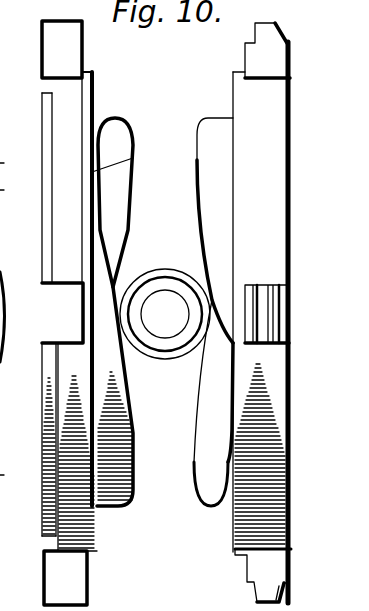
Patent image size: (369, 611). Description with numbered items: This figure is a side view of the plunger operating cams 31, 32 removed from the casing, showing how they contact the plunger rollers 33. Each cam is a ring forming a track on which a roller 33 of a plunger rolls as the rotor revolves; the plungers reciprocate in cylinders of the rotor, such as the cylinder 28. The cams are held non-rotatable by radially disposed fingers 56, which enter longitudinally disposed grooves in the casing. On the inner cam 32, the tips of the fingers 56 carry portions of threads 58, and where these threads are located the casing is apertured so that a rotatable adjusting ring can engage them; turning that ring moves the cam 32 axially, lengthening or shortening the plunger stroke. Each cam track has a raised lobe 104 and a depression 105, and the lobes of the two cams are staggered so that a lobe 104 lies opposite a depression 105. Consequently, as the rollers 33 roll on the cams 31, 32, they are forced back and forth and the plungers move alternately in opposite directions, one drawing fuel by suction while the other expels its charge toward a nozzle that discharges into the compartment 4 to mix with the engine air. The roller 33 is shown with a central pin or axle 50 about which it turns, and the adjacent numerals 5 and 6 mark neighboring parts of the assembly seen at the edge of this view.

The cam 31 is at (80, 98).
The inner cam 32 is at (273, 142).
The roller 33 is at (144, 268).
The pin 50 is at (165, 314).
The finger 56 is at (57, 43).
The thread portion 58 is at (266, 32).
The lobe 104 is at (174, 464).
The depression 105 is at (135, 159).
The cylinder 28 is at (13, 282).
The member 5 is at (6, 186).
The member 6 is at (6, 158).
The compartment 4 is at (6, 474).